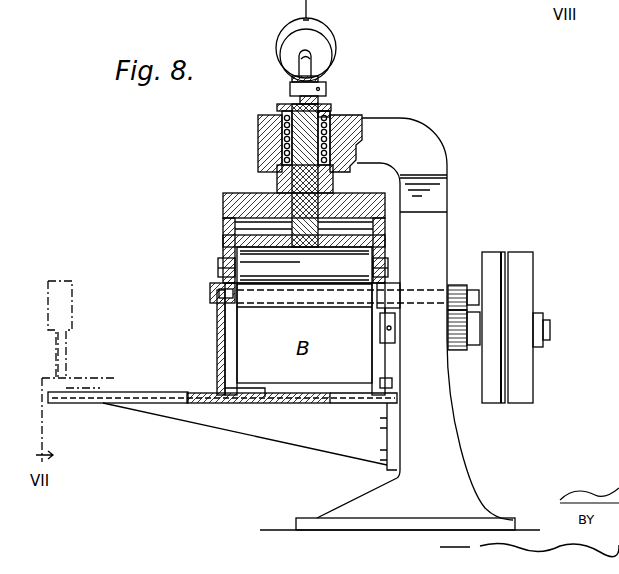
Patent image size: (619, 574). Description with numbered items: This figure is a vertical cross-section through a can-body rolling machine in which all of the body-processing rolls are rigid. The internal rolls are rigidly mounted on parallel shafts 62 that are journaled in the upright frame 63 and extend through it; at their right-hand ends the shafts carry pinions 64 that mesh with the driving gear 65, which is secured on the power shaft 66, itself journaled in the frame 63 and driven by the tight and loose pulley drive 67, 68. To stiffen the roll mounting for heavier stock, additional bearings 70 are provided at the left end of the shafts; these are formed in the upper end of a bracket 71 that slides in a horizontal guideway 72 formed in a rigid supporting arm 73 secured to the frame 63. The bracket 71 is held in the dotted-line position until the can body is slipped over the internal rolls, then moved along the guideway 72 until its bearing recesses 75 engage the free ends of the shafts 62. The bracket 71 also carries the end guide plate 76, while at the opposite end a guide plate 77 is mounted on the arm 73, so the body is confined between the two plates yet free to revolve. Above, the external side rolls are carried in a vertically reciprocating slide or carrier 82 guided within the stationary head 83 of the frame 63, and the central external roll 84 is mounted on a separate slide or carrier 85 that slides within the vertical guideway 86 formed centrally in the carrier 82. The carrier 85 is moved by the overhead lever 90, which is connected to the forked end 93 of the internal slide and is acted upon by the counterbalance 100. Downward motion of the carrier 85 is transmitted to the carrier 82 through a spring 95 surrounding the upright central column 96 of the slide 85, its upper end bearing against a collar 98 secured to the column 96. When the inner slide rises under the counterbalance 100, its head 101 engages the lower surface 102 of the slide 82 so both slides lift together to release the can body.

The counterbalance 100 is at (328, 38).
The overhead lever 90 is at (300, 72).
The forked end 93 is at (326, 95).
The collar 98 is at (278, 105).
The spring 95 is at (322, 115).
The stationary head 83 is at (356, 118).
The upright central column 96 is at (276, 180).
The vertical guideway 86 is at (334, 182).
The slide or carrier 82 is at (240, 200).
The slide or carrier 85 is at (246, 236).
The lower surface 102 is at (357, 223).
The head 101 is at (360, 232).
The central external roll 84 is at (304, 265).
The bearings 70 is at (215, 282).
The bearing recesses 75 is at (213, 293).
The bracket 71 is at (66, 372).
The end guide plate 76 is at (236, 333).
The shafts 62 is at (409, 293).
The guide plate 77 is at (395, 362).
The pinions 64 is at (452, 285).
The driving gear 65 is at (452, 350).
The tight pulley 67 is at (490, 253).
The loose pulley 68 is at (528, 272).
The power shaft 66 is at (550, 331).
The upright frame 63 is at (433, 216).
The horizontal guideway 72 is at (295, 399).
The rigid supporting arm 73 is at (262, 430).